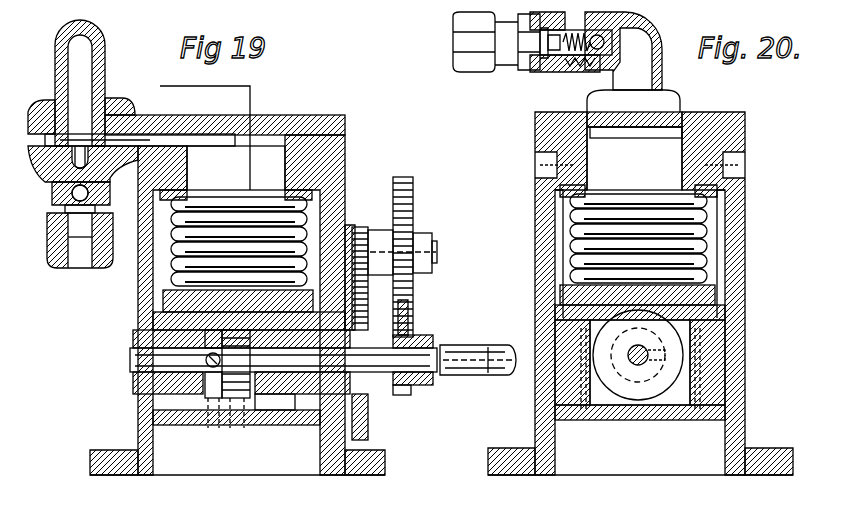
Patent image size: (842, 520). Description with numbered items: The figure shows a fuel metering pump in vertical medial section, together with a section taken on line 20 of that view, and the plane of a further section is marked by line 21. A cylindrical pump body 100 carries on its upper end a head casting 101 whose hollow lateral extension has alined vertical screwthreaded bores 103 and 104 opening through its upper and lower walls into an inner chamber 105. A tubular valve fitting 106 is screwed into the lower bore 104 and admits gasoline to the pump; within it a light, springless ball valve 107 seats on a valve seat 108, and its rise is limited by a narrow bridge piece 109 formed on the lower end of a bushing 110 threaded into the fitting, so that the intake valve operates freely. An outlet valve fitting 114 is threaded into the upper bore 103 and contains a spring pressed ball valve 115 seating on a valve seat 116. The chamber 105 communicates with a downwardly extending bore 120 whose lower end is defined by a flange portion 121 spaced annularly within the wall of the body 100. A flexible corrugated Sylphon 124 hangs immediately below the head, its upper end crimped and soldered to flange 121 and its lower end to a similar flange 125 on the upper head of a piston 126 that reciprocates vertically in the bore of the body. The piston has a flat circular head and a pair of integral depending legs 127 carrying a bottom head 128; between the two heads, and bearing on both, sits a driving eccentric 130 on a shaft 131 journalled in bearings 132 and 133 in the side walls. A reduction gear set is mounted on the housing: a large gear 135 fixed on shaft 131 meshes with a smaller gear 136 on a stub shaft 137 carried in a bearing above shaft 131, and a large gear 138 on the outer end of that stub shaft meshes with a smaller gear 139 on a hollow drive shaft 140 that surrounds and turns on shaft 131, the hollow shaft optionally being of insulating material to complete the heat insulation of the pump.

In FIG. 19, the section line 20 is at (80, 92).
In FIG. 19, the section line 21 is at (22, 148).
In FIG. 19, the cylindrical pump body 100 is at (136, 284).
In FIG. 20, the cylindrical pump body 100 is at (748, 253).
In FIG. 19, the head casting 101 is at (276, 116).
In FIG. 20, the head casting 101 is at (720, 113).
In FIG. 19, the upper screwthreaded bore 103 is at (112, 97).
In FIG. 19, the lower screwthreaded bore 104 is at (45, 162).
In FIG. 19, the inner chamber 105 is at (134, 142).
In FIG. 20, the inner chamber 105 is at (636, 134).
In FIG. 19, the tubular valve fitting 106 is at (68, 272).
In FIG. 19, the ball valve 107 is at (89, 193).
In FIG. 19, the valve seat 108 is at (96, 208).
In FIG. 19, the bridge piece 109 is at (62, 192).
In FIG. 19, the bushing 110 is at (75, 146).
In FIG. 19, the outlet valve fitting 114 is at (103, 46).
In FIG. 20, the outlet valve fitting 114 is at (660, 38).
In FIG. 20, the spring pressed ball valve 115 is at (576, 72).
In FIG. 20, the valve seat 116 is at (590, 60).
In FIG. 19, the downwardly extending bore 120 is at (236, 168).
In FIG. 20, the downwardly extending bore 120 is at (634, 158).
In FIG. 19, the flange portion 121 is at (306, 194).
In FIG. 20, the flange portion 121 is at (638, 191).
In FIG. 19, the Sylphon 124 is at (306, 224).
In FIG. 20, the Sylphon 124 is at (712, 226).
In FIG. 19, the flange 125 is at (160, 308).
In FIG. 20, the flange 125 is at (716, 299).
In FIG. 19, the piston 126 is at (148, 324).
In FIG. 20, the piston 126 is at (706, 318).
In FIG. 19, the depending legs 127 is at (206, 424).
In FIG. 20, the depending legs 127 is at (570, 376).
In FIG. 19, the bottom head 128 is at (296, 426).
In FIG. 20, the bottom head 128 is at (612, 421).
In FIG. 19, the driving eccentric 130 is at (238, 428).
In FIG. 20, the driving eccentric 130 is at (640, 357).
In FIG. 19, the shaft 131 is at (283, 358).
In FIG. 20, the shaft 131 is at (646, 349).
In FIG. 19, the bearing 132 is at (146, 380).
In FIG. 19, the bearing 133 is at (302, 391).
In FIG. 19, the large gear 135 is at (370, 432).
In FIG. 19, the smaller gear 136 is at (360, 233).
In FIG. 19, the stub shaft 137 is at (438, 255).
In FIG. 19, the large gear 138 is at (413, 210).
In FIG. 19, the smaller gear 139 is at (403, 388).
In FIG. 19, the hollow drive shaft 140 is at (445, 344).